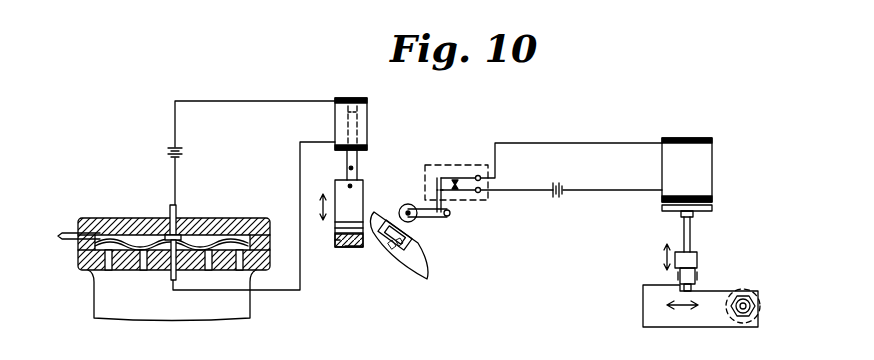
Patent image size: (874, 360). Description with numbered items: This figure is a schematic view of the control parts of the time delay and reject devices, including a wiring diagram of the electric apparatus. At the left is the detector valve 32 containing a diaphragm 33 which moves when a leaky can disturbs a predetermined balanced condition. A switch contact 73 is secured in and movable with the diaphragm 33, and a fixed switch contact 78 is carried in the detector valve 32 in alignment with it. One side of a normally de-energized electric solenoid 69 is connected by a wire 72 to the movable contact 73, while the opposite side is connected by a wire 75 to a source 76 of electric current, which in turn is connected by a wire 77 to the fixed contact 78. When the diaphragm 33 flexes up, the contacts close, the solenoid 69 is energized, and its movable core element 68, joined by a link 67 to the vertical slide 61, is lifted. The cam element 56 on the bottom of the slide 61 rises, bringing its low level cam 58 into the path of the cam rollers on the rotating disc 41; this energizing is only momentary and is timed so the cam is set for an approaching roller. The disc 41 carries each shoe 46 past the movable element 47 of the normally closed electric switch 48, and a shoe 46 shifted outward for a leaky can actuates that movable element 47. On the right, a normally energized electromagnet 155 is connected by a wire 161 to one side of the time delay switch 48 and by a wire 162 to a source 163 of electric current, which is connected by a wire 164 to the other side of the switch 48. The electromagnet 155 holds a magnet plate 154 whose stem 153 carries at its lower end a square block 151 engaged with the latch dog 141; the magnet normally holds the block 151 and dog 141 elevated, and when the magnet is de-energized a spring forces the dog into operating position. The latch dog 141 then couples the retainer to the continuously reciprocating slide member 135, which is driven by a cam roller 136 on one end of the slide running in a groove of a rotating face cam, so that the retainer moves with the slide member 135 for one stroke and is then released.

The wire 75 is at (270, 99).
The source of electric current 76 is at (169, 148).
The wire 77 is at (176, 180).
The fixed switch contact 78 is at (178, 216).
The diaphragm 33 is at (128, 238).
The detector valve 32 is at (78, 256).
The switch contact 73 is at (152, 262).
The wire 72 is at (300, 300).
The electric solenoid 69 is at (360, 110).
The movable core element 68 is at (346, 156).
The link 67 is at (354, 176).
The vertical slide 61 is at (352, 197).
The low level cam 58 is at (335, 240).
The cam element 56 is at (350, 247).
The disc 41 is at (414, 262).
The shoe 46 is at (416, 242).
The movable element 47 is at (432, 220).
The electric switch 48 is at (452, 163).
The wire 161 is at (566, 143).
The wire 164 is at (512, 191).
The source of electric current 163 is at (562, 196).
The wire 162 is at (607, 191).
The electromagnet 155 is at (700, 158).
The magnet plate 154 is at (712, 212).
The stem 153 is at (684, 234).
The square block 151 is at (692, 258).
The latch dog 141 is at (697, 282).
The slide member 135 is at (650, 314).
The cam roller 136 is at (762, 306).